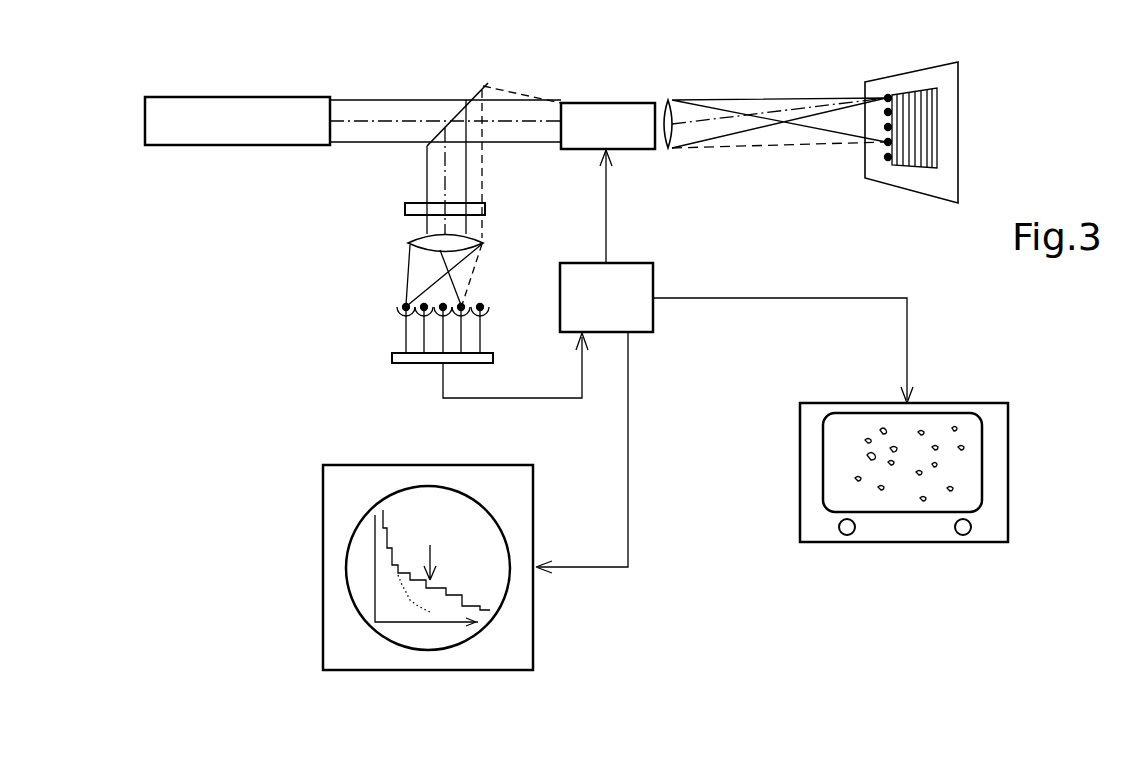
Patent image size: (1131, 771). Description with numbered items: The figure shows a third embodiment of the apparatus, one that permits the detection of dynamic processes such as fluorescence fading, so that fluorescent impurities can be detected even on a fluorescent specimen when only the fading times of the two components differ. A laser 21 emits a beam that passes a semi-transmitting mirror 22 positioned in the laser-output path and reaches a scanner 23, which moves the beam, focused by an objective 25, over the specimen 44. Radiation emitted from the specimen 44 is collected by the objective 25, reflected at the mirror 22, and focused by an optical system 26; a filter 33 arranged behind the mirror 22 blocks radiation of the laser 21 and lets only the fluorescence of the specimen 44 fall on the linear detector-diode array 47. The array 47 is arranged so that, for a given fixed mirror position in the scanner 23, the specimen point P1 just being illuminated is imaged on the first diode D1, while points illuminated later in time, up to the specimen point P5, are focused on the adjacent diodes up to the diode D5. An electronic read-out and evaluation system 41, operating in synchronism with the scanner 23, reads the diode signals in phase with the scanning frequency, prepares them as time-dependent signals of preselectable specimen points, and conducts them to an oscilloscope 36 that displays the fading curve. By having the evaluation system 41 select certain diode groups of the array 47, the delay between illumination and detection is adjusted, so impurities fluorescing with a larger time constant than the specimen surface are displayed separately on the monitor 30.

The laser 21 is at (248, 147).
The semi-transmitting mirror 22 is at (410, 146).
The scanner 23 is at (580, 150).
The objective 25 is at (672, 148).
The optical system 26 is at (414, 242).
The filter 33 is at (405, 210).
The detector-diode array 47 is at (395, 356).
The first diode D1 is at (404, 306).
The fifth diode D5 is at (482, 305).
The electronic read-out and evaluation system 41 is at (642, 322).
The oscilloscope 36 is at (523, 628).
The monitor 30 is at (980, 403).
The specimen 44 is at (905, 155).
The specimen point P1 is at (886, 97).
The specimen point P5 is at (885, 157).